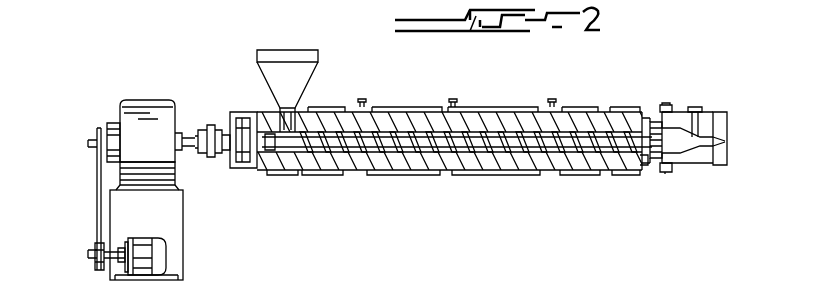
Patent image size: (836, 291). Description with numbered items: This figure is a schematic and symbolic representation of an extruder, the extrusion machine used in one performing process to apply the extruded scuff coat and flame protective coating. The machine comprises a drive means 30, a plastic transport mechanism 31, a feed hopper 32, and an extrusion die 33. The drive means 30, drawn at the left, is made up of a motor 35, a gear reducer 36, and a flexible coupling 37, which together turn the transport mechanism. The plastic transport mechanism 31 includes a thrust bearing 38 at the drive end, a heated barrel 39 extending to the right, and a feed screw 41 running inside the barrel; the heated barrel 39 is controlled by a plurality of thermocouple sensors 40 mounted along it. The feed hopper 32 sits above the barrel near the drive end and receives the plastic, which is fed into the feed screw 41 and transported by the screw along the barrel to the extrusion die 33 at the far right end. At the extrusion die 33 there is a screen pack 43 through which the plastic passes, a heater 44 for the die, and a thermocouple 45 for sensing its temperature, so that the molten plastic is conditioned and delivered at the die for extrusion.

The drive means 30 is at (78, 176).
The plastic transport mechanism 31 is at (466, 103).
The feed hopper 32 is at (319, 66).
The extrusion die 33 is at (731, 167).
The motor 35 is at (134, 246).
The gear reducer 36 is at (143, 100).
The flexible coupling 37 is at (211, 126).
The thrust bearing 38 is at (241, 170).
The heated barrel 39 is at (401, 113).
The thermocouple sensors 40 is at (364, 101).
The feed screw 41 is at (498, 134).
The screen pack 43 is at (646, 121).
The heater 44 is at (671, 104).
The thermocouple 45 is at (702, 107).